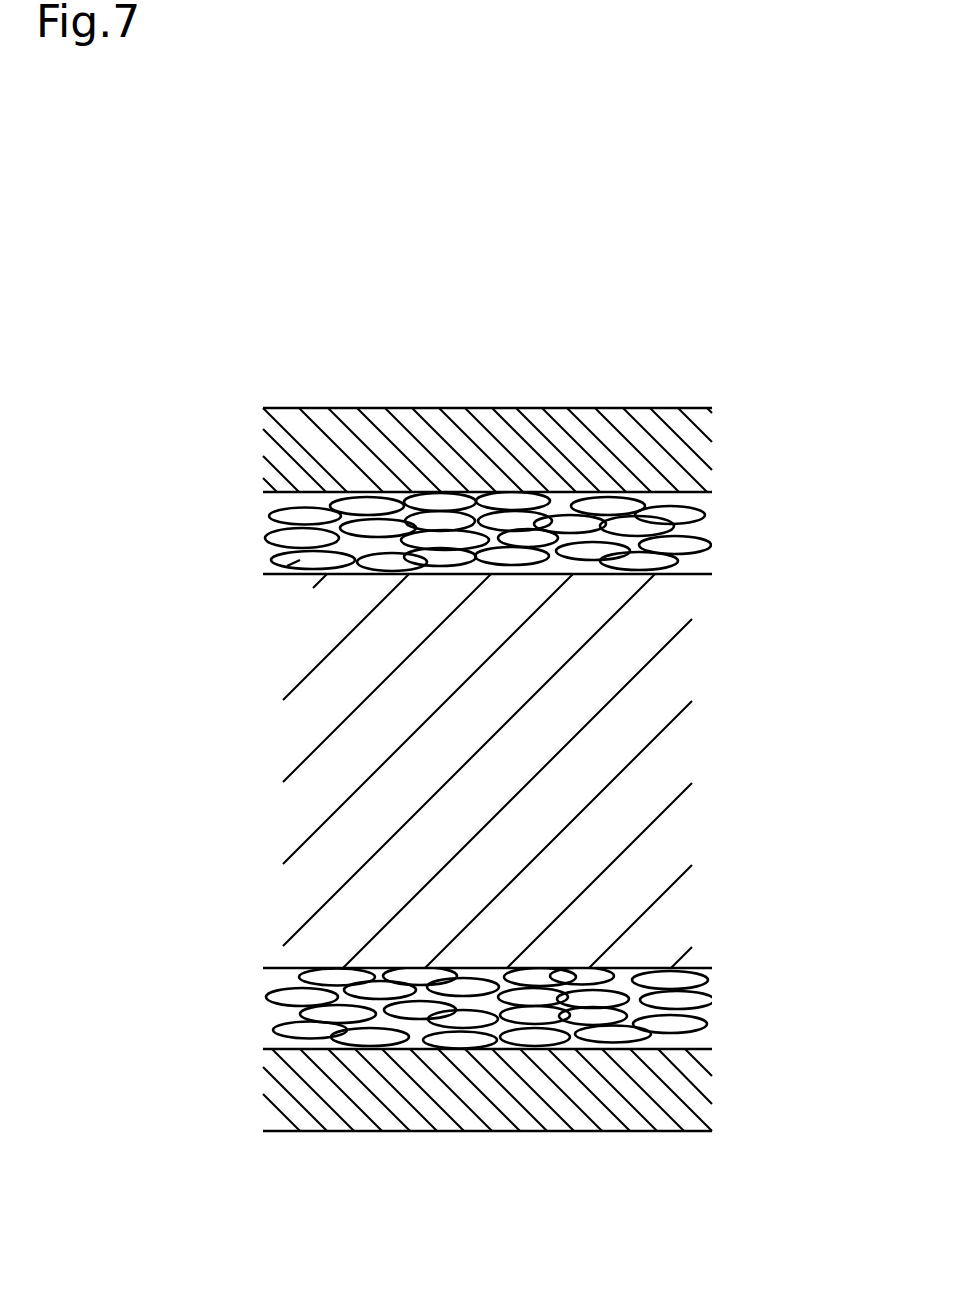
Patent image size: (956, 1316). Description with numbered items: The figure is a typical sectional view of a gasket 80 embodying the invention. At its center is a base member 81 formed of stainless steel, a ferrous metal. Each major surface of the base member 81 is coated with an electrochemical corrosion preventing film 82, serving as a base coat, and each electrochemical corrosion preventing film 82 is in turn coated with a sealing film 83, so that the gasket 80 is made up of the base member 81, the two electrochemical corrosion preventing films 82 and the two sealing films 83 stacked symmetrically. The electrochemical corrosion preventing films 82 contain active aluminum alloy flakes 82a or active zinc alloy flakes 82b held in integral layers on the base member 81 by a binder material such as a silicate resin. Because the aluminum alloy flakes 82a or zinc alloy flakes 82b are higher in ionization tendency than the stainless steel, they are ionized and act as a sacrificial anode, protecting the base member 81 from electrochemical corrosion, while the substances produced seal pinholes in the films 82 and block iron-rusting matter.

The gasket 80 is at (802, 1133).
The base member 81 is at (715, 968).
The electrochemical corrosion preventing films 82 is at (715, 492).
The active aluminum alloy flakes 82a is at (290, 564).
The active zinc alloy flakes 82b is at (292, 538).
The sealing films 83 is at (715, 408).